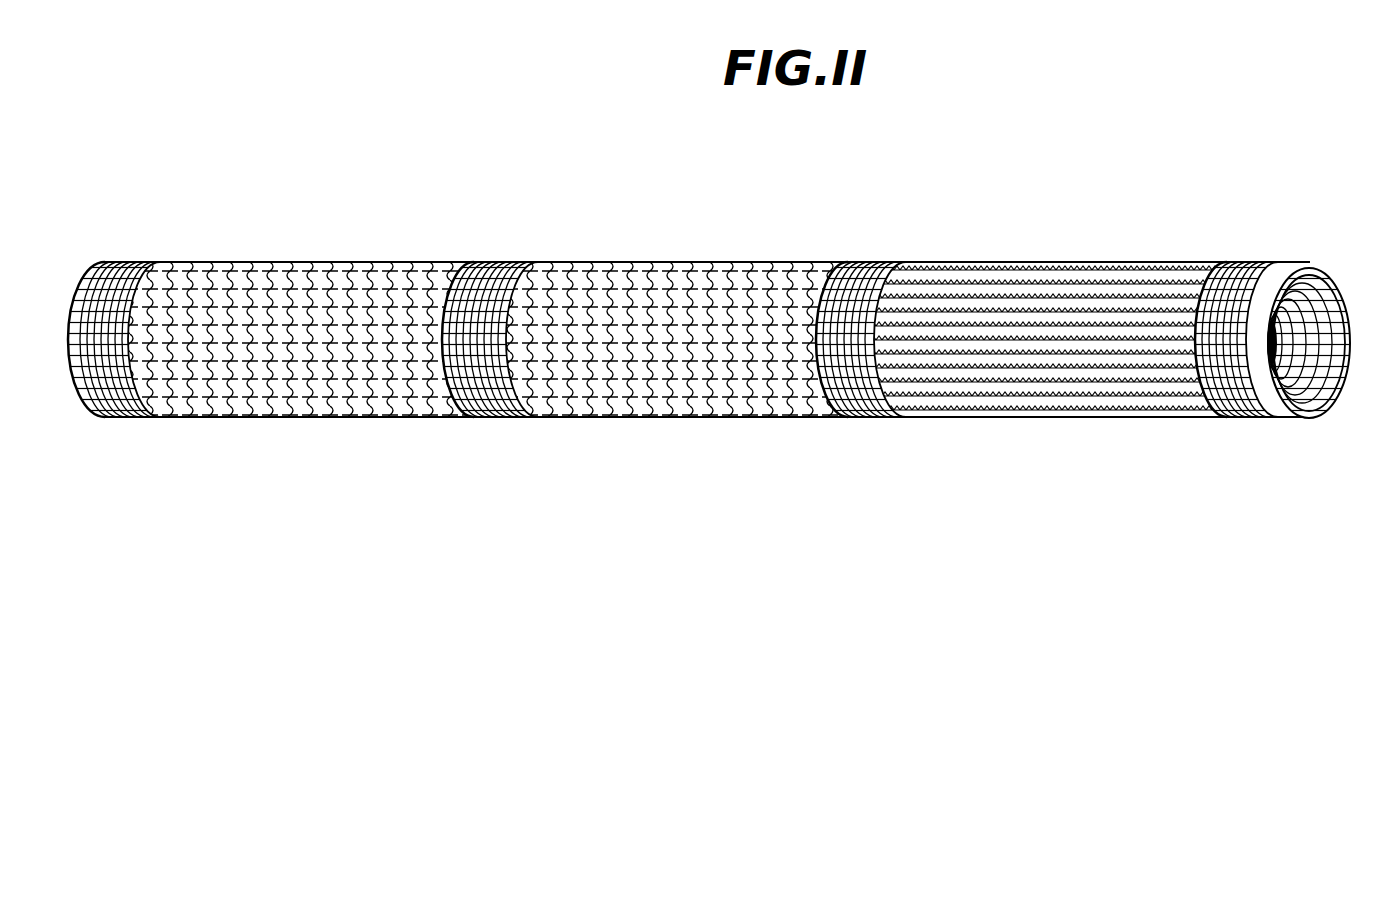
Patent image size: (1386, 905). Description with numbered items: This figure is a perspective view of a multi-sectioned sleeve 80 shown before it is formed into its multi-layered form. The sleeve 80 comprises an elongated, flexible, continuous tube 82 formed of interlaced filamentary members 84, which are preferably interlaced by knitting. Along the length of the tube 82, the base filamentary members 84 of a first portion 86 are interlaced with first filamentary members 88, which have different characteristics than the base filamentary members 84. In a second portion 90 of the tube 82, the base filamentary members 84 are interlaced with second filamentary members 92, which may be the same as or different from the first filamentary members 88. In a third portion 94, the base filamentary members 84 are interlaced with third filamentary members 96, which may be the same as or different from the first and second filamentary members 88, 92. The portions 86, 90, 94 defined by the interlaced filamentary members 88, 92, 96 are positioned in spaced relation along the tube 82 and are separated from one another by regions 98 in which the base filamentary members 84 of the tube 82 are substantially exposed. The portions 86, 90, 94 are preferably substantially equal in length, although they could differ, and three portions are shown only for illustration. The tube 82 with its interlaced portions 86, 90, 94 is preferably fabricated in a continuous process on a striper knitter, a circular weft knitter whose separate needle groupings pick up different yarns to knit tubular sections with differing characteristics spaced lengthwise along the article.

The sleeve 80 is at (893, 200).
The tube 82 is at (95, 417).
The filamentary members 84 is at (122, 265).
The first portion 86 is at (313, 418).
The first filamentary members 88 is at (318, 278).
The second portion 90 is at (690, 418).
The second filamentary members 92 is at (668, 276).
The third portion 94 is at (1060, 418).
The third filamentary members 96 is at (1102, 273).
The regions 98 is at (130, 412).